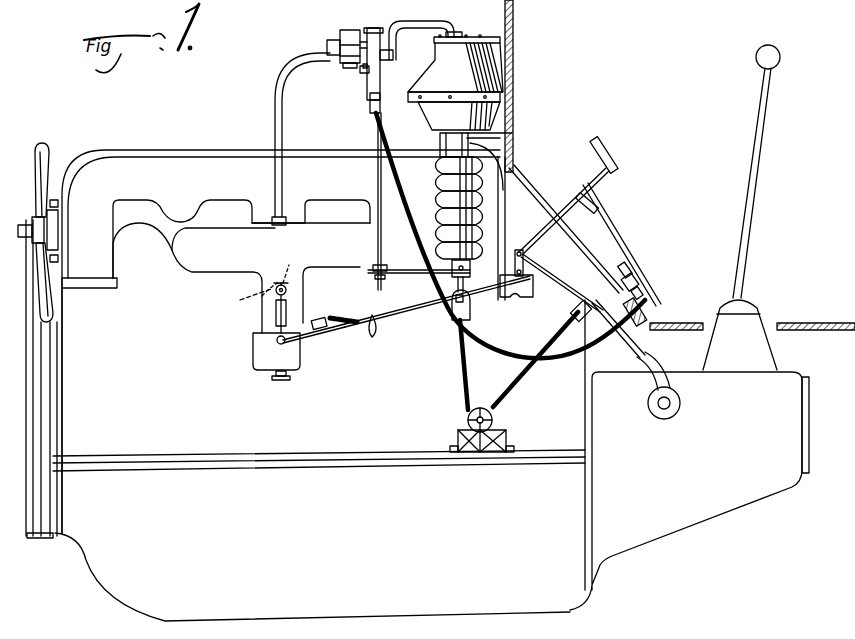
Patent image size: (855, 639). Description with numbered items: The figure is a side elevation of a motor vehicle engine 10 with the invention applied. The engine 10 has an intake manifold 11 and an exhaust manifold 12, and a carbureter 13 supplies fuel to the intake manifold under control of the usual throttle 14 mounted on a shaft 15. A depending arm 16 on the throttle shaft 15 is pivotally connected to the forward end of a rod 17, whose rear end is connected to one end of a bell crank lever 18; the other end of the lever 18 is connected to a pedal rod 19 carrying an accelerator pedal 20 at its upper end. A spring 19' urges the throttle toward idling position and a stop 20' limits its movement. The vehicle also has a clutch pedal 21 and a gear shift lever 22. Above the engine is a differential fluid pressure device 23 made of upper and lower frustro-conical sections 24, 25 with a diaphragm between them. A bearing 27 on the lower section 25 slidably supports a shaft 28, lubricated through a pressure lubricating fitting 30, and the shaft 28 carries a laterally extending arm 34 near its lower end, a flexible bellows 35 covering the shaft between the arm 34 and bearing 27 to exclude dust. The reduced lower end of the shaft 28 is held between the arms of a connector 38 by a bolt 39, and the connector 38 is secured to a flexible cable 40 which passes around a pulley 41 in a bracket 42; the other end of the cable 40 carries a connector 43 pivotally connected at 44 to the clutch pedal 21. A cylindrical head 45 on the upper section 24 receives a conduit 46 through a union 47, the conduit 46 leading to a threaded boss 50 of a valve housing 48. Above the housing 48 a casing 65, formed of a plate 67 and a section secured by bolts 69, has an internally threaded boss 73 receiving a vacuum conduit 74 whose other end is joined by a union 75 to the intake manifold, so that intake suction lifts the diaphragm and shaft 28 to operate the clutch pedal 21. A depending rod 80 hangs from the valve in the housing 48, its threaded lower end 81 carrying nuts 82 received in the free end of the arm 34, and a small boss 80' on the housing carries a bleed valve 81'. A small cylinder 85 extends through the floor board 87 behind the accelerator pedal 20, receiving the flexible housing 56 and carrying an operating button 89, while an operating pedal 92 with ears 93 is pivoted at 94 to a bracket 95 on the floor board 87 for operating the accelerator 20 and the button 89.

The motor vehicle engine 10 is at (138, 150).
The intake manifold 11 is at (200, 255).
The exhaust manifold 12 is at (200, 160).
The carbureter 13 is at (253, 350).
The throttle 14 is at (245, 294).
The throttle shaft 15 is at (287, 290).
The depending arm 16 is at (276, 318).
The rod 17 is at (352, 330).
The bell crank lever 18 is at (540, 268).
The pedal rod 19 is at (529, 273).
The spring 19' is at (382, 333).
The accelerator pedal 20 is at (618, 244).
The stop 20' is at (296, 260).
The clutch pedal 21 is at (637, 353).
The gear shift lever 22 is at (745, 193).
The differential fluid pressure device 23 is at (490, 72).
The upper frustro-conical casing section 24 is at (455, 86).
The lower frustro-conical casing section 25 is at (430, 117).
The bearing 27 is at (505, 135).
The shaft 28 is at (470, 271).
The pressure lubricating fitting 30 is at (440, 150).
The laterally extending arm 34 is at (405, 278).
The flexible bellows 35 is at (515, 182).
The connector 38 is at (471, 312).
The bolt 39 is at (457, 310).
The flexible cable 40 is at (460, 382).
The pulley 41 is at (484, 407).
The bracket 42 is at (508, 438).
The connector 43 is at (565, 326).
The pivotal connection 44 is at (572, 311).
The cylindrical head 45 is at (500, 46).
The conduit 46 is at (430, 26).
The union 47 is at (466, 33).
The valve housing 48 is at (369, 95).
The threaded boss 50 is at (381, 30).
The flexible housing 56 is at (553, 364).
The casing 65 is at (347, 29).
The plate 67 is at (332, 60).
The bolts 69 is at (340, 33).
The internally threaded boss 73 is at (290, 82).
The vacuum conduit 74 is at (293, 57).
The union 75 is at (272, 217).
The depending rod 80 is at (362, 201).
The small boss 80' is at (392, 76).
The threaded lower end 81 is at (345, 310).
The valve 81' is at (348, 77).
The nuts 82 is at (372, 278).
The small cylinder 85 is at (636, 338).
The floor board 87 is at (602, 258).
The operating button 89 is at (646, 306).
The operating pedal 92 is at (612, 232).
The ears 93 is at (638, 280).
The pivotal connection 94 is at (632, 268).
The bracket 95 is at (643, 292).